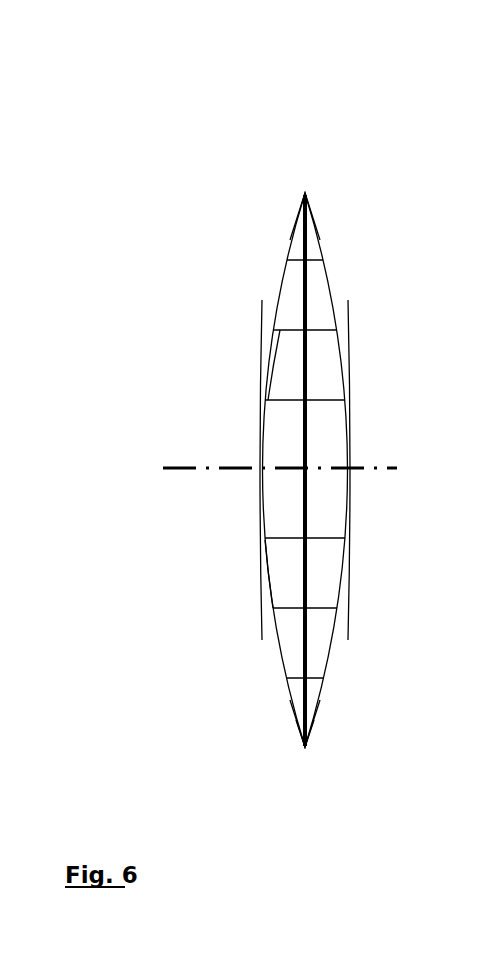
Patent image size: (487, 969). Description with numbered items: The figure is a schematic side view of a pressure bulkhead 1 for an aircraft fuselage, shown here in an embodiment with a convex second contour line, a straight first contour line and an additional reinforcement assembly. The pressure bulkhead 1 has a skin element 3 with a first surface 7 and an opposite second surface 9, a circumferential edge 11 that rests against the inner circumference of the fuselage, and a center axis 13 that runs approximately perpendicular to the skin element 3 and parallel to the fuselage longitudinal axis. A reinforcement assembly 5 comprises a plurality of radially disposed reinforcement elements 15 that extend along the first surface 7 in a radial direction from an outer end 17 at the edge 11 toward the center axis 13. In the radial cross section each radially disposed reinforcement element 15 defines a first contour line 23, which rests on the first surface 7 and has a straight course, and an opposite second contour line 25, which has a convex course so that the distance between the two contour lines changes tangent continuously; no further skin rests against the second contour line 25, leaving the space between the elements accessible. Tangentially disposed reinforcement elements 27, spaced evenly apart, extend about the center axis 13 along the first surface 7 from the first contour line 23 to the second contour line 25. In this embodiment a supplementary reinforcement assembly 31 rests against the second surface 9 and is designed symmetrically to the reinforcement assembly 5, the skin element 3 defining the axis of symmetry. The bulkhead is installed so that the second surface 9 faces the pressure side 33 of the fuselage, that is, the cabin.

The pressure bulkhead 1 is at (360, 167).
The skin element 3 is at (307, 295).
The reinforcement assembly 5 is at (287, 508).
The first surface 7 is at (264, 415).
The second surface 9 is at (264, 426).
The circumferential edge 11 is at (305, 193).
The center axis 13 is at (183, 468).
The radially disposed reinforcement elements 15 is at (285, 352).
The outer end 17 is at (310, 722).
The first contour line 23 is at (308, 582).
The second contour line 25 is at (267, 570).
The tangentially disposed reinforcement elements 27 is at (277, 400).
The supplementary reinforcement assembly 31 is at (315, 632).
The pressure side 33 is at (388, 503).